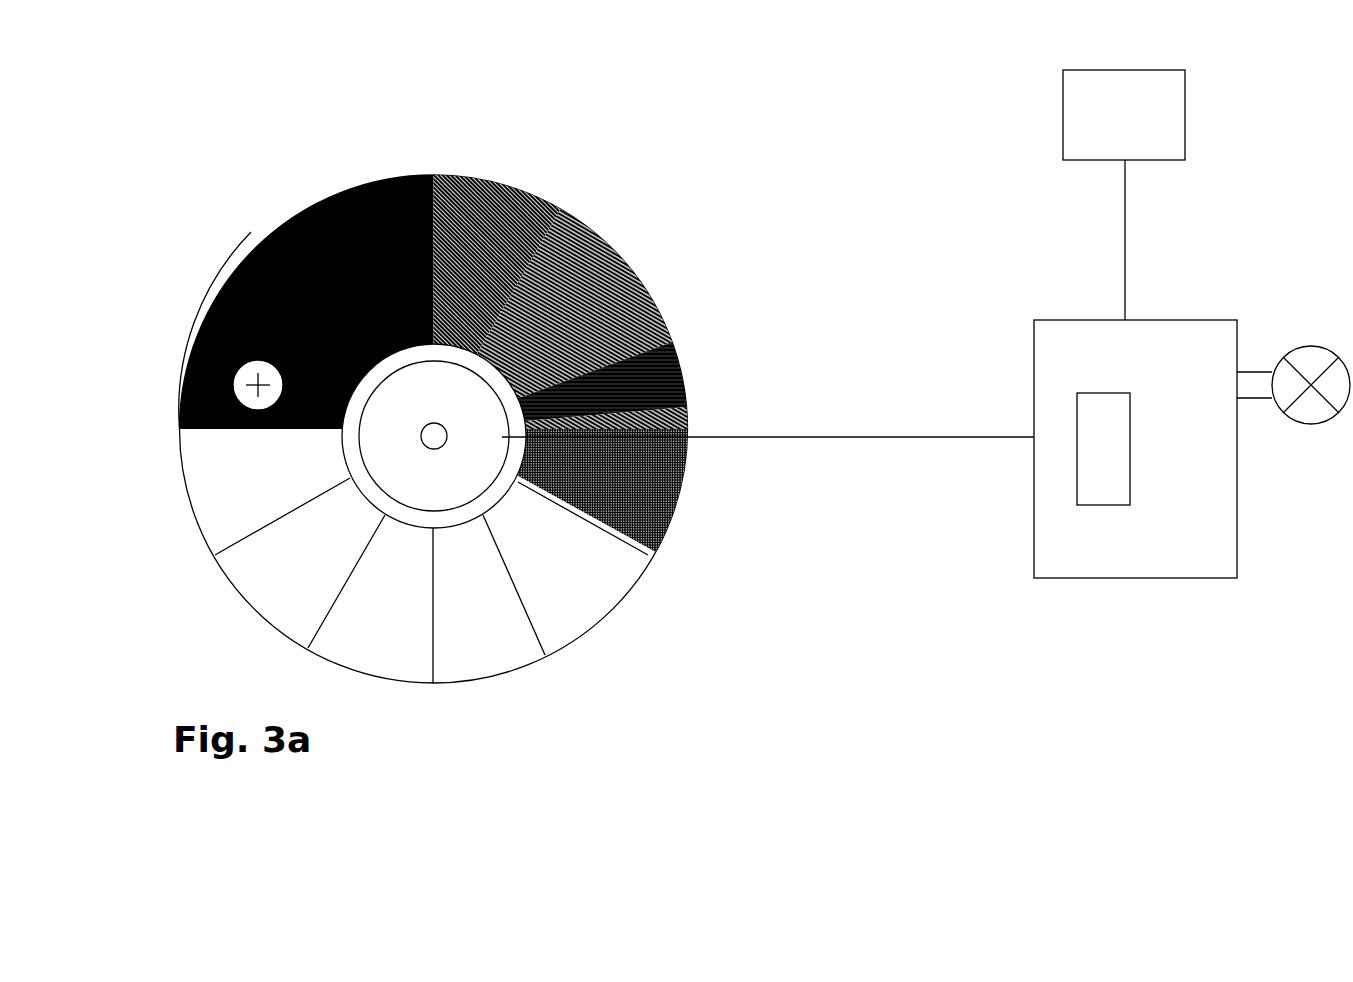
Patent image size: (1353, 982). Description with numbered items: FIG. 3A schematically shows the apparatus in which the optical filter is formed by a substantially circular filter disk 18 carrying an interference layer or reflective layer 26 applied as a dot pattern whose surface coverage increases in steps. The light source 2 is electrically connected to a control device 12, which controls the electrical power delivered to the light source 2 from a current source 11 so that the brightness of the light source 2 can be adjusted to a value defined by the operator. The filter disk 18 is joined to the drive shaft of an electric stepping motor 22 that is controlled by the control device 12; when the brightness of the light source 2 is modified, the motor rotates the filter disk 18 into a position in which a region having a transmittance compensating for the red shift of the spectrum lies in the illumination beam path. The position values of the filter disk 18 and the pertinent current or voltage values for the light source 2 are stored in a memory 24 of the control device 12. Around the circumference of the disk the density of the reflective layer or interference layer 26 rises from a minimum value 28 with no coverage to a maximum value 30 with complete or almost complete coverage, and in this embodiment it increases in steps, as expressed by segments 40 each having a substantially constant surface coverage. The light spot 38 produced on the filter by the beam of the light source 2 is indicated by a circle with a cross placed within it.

The light source 2 is at (1303, 367).
The current source 11 is at (1088, 122).
The control device 12 is at (1133, 568).
The filter disk 18 is at (430, 170).
The electric stepping motor 22 is at (475, 422).
The memory 24 is at (1097, 452).
The reflective layer or interference layer 26 is at (312, 208).
The minimum value 28 is at (240, 495).
The maximum value 30 is at (185, 388).
The light spot 38 is at (248, 380).
The segments 40 is at (542, 542).